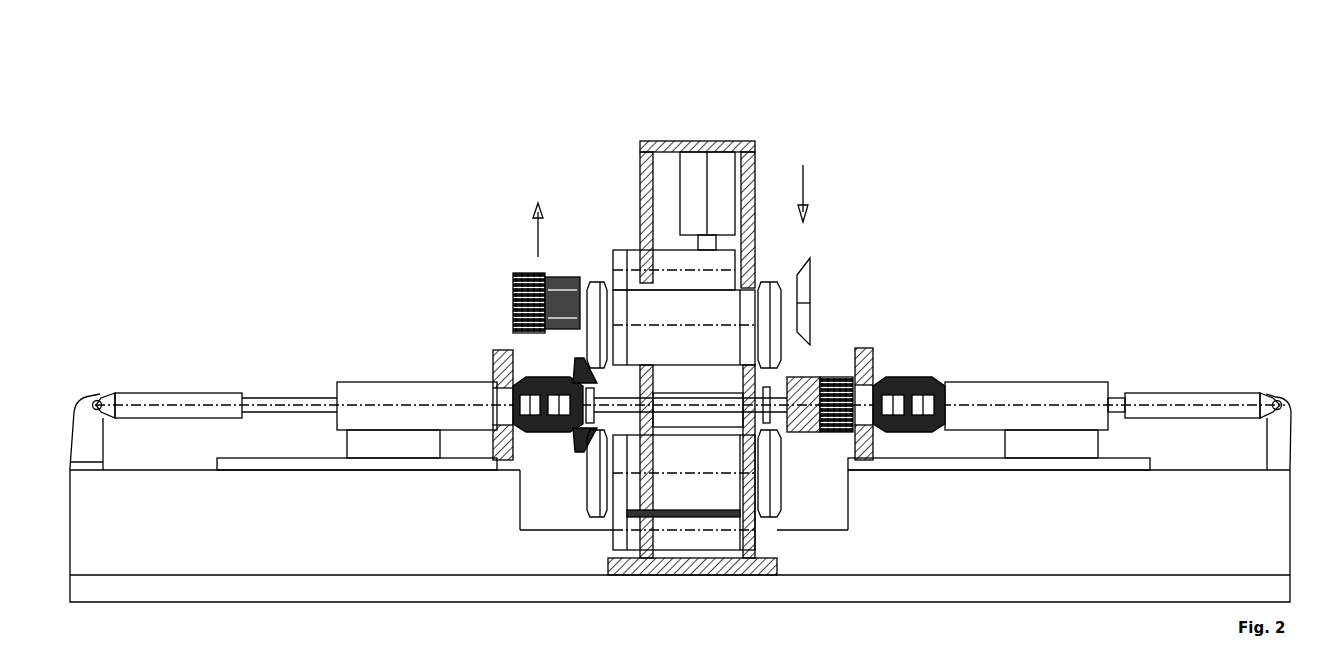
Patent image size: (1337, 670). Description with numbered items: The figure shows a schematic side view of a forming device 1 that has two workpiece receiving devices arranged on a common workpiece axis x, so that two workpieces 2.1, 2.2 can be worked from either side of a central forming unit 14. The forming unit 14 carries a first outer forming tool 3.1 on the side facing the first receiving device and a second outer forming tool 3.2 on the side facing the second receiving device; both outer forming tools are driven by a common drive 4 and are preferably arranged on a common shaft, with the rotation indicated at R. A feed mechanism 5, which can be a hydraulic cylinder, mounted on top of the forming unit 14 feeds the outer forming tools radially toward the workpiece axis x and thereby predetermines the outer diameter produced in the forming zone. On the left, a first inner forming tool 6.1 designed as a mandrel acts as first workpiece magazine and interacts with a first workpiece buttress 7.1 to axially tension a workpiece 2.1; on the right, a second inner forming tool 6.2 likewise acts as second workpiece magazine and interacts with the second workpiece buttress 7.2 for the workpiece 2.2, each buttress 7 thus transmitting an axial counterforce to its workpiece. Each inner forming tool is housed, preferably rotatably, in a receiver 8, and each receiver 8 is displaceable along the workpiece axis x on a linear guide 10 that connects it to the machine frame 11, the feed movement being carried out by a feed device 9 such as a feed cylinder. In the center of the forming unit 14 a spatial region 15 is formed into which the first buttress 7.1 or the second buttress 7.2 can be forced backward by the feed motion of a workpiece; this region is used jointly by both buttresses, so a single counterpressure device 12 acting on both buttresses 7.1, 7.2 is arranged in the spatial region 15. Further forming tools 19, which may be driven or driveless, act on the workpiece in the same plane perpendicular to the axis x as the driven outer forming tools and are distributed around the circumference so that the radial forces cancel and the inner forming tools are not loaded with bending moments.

The device 1 is at (910, 84).
The workpiece 2.1 is at (582, 435).
The workpiece 2.2 is at (530, 273).
The first outer forming tool 3.1 is at (597, 282).
The second outer forming tool 3.2 is at (770, 283).
The drive 4 is at (633, 250).
The feed mechanism 5 is at (695, 165).
The first inner forming tool 6.1 is at (530, 385).
The second inner forming tool 6.2 is at (918, 383).
The workpiece buttress 7 is at (845, 378).
The first workpiece buttress 7.1 is at (596, 394).
The second workpiece buttress 7.2 is at (770, 390).
The receiver 8 is at (352, 388).
The feed device 9 is at (200, 393).
The linear guide 10 is at (405, 462).
The machine frame 11 is at (505, 590).
The counterpressure device 12 is at (668, 427).
The forming unit 14 is at (665, 143).
The spatial region 15 is at (717, 395).
The further forming tools 19 is at (595, 502).
The rotation axis R is at (672, 326).
The workpiece axis x is at (425, 395).